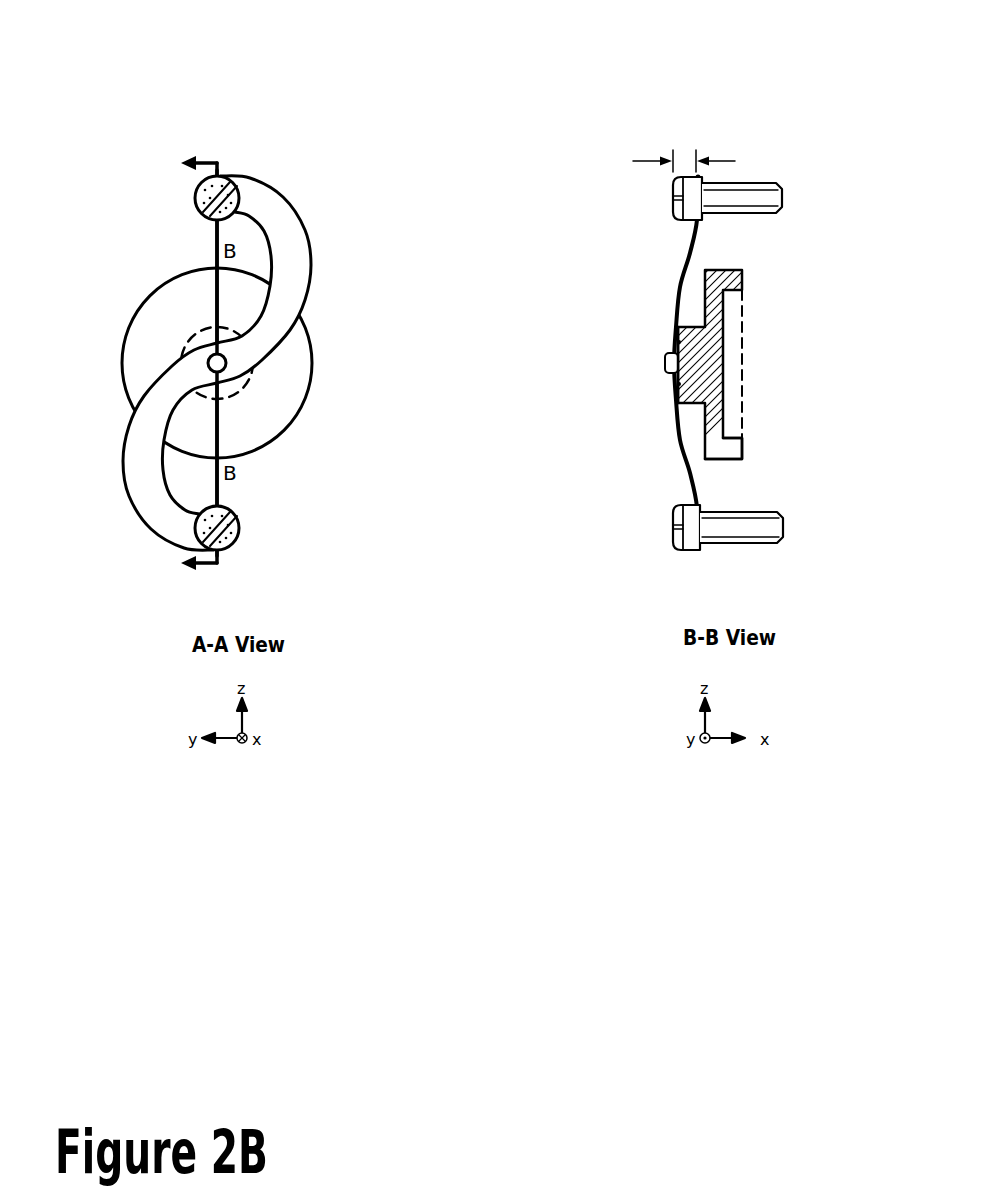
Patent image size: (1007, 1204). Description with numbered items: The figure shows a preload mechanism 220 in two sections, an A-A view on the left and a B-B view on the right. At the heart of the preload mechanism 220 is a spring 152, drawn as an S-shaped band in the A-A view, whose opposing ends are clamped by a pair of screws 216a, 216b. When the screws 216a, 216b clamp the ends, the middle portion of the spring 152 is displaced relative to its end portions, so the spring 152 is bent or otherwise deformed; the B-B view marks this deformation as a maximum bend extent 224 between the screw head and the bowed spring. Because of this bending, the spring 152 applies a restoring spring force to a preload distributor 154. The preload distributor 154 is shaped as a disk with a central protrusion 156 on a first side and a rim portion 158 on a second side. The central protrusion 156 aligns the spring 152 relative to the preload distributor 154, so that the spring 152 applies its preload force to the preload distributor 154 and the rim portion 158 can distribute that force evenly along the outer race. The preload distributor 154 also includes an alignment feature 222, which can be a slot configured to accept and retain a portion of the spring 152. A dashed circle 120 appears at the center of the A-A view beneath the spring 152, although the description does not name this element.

The preload mechanism 220 is at (347, 88).
The screw 216a is at (448, 195).
The screw 216b is at (489, 542).
The spring 152 is at (412, 363).
The preload distributor 154 is at (501, 355).
The central protrusion 156 is at (367, 332).
The shaft 120 is at (274, 385).
The rim portion 158 is at (774, 437).
The alignment feature 222 is at (611, 366).
The maximum bend extent 224 is at (665, 149).